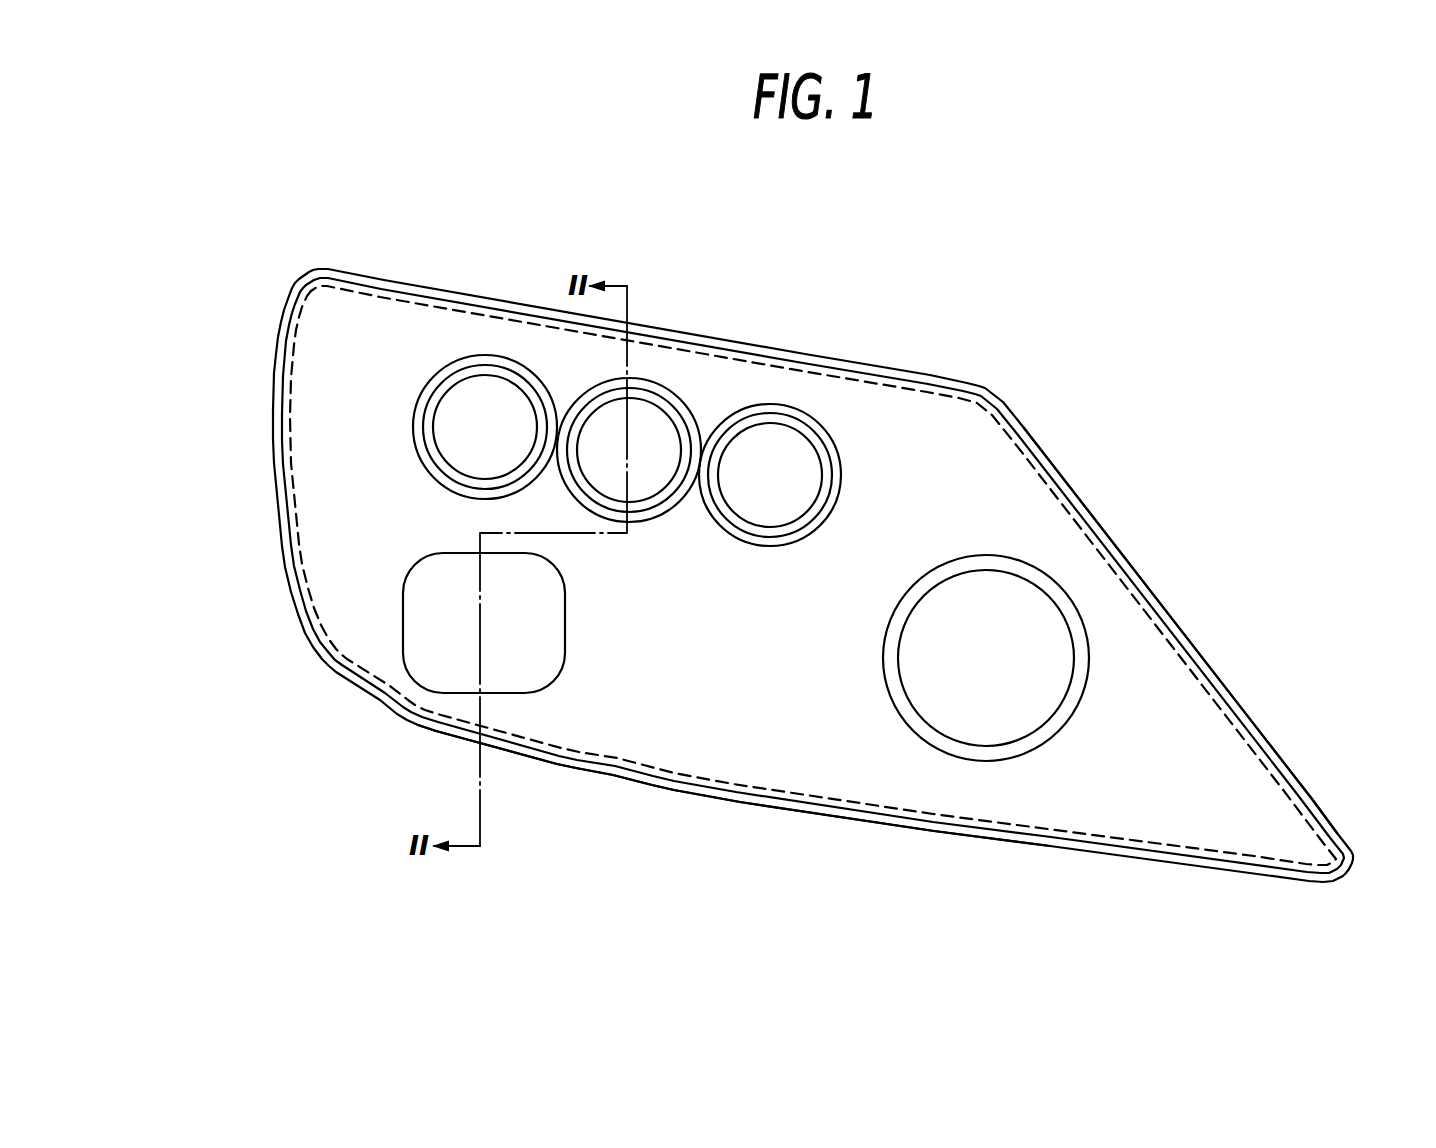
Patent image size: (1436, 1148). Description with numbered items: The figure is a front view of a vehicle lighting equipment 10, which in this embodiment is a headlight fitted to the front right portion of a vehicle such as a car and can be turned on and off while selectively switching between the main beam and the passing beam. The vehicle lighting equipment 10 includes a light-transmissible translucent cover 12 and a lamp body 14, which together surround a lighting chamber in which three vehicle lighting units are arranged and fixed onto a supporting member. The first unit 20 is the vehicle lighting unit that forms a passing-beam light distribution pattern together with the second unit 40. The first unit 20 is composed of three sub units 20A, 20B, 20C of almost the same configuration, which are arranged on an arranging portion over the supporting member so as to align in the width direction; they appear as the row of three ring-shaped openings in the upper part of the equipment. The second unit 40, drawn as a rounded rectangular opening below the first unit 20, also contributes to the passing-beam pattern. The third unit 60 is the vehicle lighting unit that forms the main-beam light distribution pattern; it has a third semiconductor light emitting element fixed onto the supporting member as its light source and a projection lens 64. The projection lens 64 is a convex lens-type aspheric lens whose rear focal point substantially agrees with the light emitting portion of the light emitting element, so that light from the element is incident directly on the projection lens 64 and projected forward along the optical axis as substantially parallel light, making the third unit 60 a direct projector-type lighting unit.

The vehicle lighting equipment 10 is at (1043, 398).
The translucent cover 12 is at (1197, 665).
The lamp body 14 is at (727, 801).
The first unit 20 is at (627, 371).
The sub unit 20A is at (770, 409).
The sub unit 20B is at (635, 430).
The sub unit 20C is at (503, 413).
The second unit 40 is at (430, 628).
The third unit 60 is at (1005, 626).
The projection lens 64 is at (938, 663).